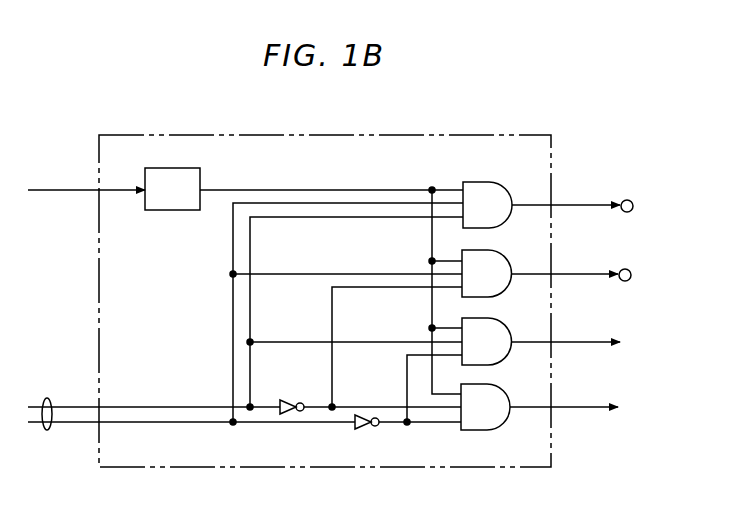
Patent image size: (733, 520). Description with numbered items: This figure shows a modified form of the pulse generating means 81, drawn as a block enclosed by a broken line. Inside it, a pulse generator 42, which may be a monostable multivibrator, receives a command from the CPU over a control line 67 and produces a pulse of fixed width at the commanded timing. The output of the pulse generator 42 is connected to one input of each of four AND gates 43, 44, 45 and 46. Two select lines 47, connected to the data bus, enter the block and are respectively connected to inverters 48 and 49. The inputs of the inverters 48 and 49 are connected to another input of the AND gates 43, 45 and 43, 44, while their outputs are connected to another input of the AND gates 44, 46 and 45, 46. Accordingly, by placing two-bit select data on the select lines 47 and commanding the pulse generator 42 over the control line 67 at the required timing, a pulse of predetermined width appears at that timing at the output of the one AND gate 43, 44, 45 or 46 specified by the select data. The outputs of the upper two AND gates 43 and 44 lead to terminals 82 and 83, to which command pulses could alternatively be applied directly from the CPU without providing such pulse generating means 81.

The pulse generating means 81 is at (472, 134).
The control line 67 is at (52, 182).
The pulse generator 42 is at (173, 163).
The select lines 47 is at (50, 398).
The inverter 48 is at (288, 398).
The inverter 49 is at (365, 432).
The AND gate 43 is at (502, 182).
The AND gate 44 is at (505, 254).
The AND gate 45 is at (505, 323).
The AND gate 46 is at (500, 393).
The terminal 82 is at (634, 203).
The terminal 83 is at (632, 273).